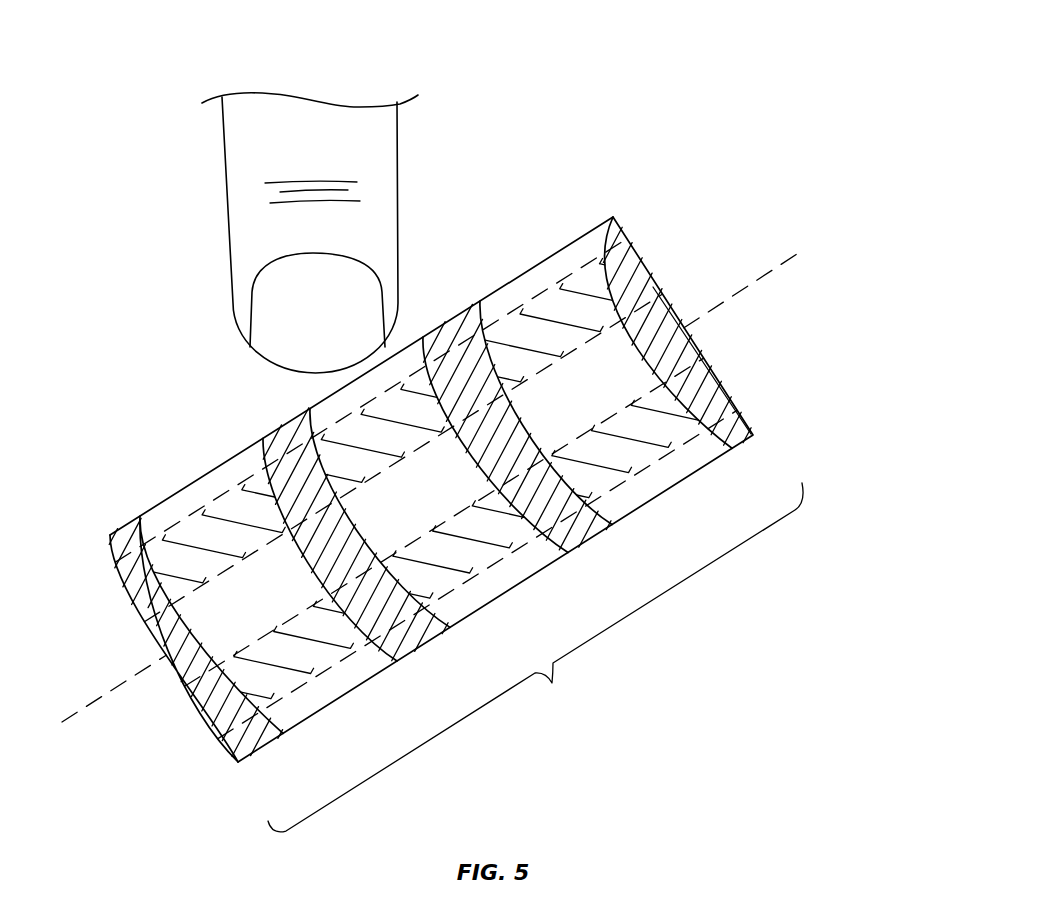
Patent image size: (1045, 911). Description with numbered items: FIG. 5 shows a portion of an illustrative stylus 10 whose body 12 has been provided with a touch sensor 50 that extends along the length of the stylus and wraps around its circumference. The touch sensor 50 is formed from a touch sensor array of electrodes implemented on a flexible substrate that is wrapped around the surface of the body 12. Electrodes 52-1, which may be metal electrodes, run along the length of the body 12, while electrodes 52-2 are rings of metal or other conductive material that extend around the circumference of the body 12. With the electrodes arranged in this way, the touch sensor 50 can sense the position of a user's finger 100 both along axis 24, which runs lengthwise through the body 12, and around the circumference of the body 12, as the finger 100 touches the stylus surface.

The electronic device 10 is at (742, 85).
The body 12 is at (636, 249).
The axis 24 is at (744, 290).
The touch sensor 50 is at (535, 657).
The electrodes 52-1 is at (537, 293).
The electrodes 52-2 is at (266, 451).
The finger 100 is at (237, 213).